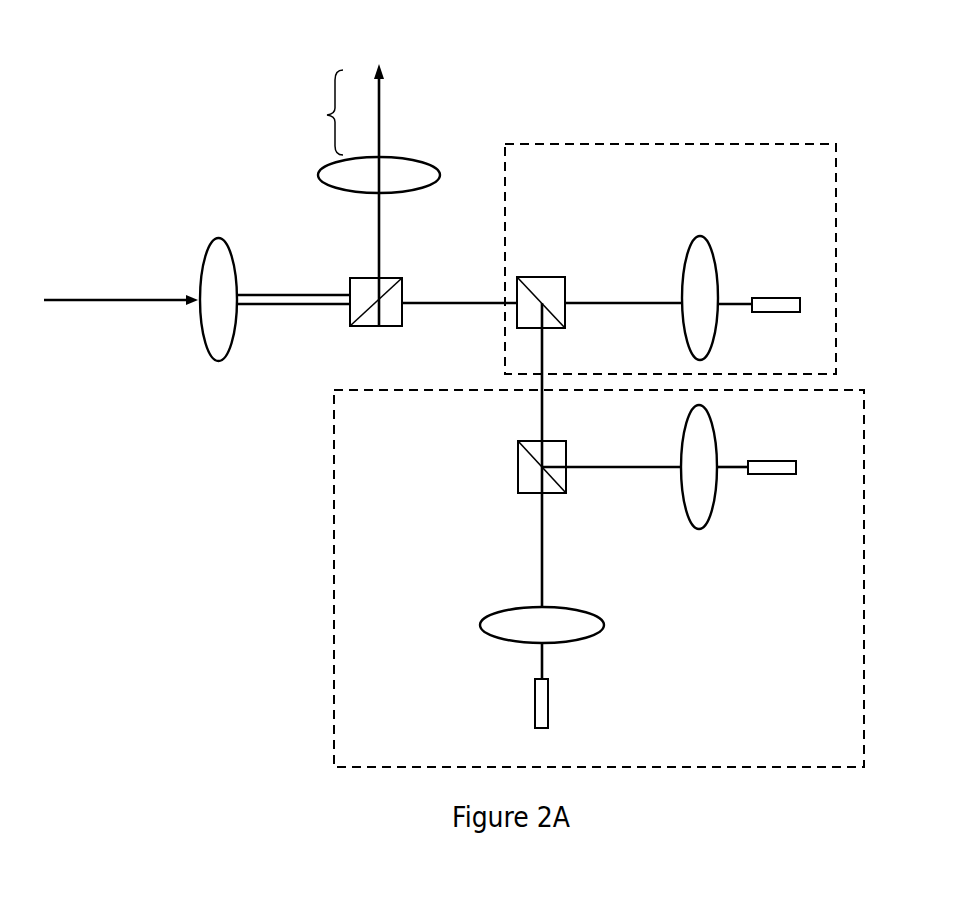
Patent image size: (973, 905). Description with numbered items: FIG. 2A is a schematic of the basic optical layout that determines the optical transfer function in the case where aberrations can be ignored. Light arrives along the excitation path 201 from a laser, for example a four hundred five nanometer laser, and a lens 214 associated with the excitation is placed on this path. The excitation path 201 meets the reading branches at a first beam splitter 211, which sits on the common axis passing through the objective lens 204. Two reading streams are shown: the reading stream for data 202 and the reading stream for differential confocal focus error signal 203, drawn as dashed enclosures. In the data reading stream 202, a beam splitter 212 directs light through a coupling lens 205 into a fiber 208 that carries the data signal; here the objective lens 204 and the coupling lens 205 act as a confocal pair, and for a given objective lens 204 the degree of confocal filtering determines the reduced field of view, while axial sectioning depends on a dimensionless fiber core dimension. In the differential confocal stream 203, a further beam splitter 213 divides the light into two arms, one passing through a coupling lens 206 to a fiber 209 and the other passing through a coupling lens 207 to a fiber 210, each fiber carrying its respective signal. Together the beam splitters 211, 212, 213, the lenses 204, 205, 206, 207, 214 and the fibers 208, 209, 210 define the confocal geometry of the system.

The excitation path 201 is at (325, 109).
The reading stream for data 202 is at (837, 252).
The reading stream for differential confocal FES 203 is at (865, 437).
The objective lens 204 is at (204, 343).
The coupling lens 205 is at (715, 255).
The coupling lens 206 is at (717, 455).
The coupling lens 207 is at (567, 609).
The fiber 208 is at (777, 297).
The fiber 209 is at (772, 475).
The fiber 210 is at (550, 704).
The beam splitter 211 is at (402, 290).
The beam splitter 212 is at (567, 284).
The beam splitter 213 is at (566, 442).
The lens 214 is at (405, 158).